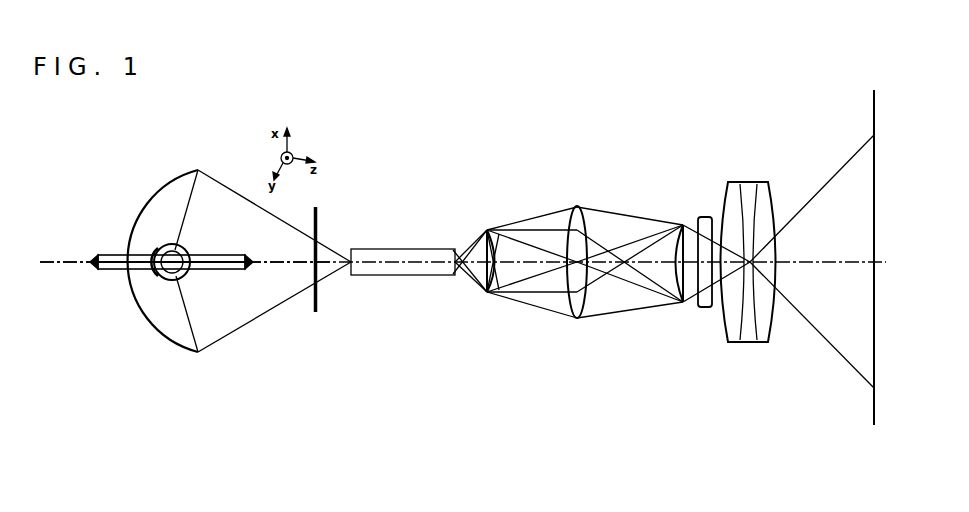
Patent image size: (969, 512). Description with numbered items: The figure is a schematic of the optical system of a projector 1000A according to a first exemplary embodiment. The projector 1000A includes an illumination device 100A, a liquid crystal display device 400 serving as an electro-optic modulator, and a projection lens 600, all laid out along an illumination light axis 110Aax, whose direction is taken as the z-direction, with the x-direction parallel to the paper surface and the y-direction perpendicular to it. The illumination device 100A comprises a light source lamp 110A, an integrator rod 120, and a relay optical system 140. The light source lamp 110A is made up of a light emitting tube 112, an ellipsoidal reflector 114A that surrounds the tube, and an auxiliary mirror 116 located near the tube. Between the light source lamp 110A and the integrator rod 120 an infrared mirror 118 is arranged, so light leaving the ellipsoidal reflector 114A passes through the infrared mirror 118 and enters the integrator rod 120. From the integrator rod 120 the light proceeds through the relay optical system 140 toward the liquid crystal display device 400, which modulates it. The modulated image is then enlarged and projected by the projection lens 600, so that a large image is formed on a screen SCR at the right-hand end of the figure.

The projector 1000A is at (500, 138).
The illumination device 100A is at (135, 427).
The light source lamp 110A is at (127, 392).
The illumination light axis 110Aax is at (55, 262).
The light emitting tube 112 is at (177, 284).
The ellipsoidal reflector 114A is at (161, 338).
The auxiliary mirror 116 is at (190, 278).
The infrared mirror 118 is at (316, 312).
The integrator rod 120 is at (396, 298).
The relay optical system 140 is at (483, 338).
The liquid crystal display device 400 is at (704, 217).
The projection lens 600 is at (757, 182).
The screen SCR is at (874, 402).